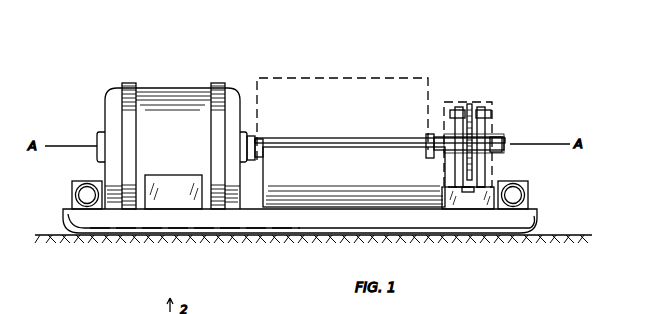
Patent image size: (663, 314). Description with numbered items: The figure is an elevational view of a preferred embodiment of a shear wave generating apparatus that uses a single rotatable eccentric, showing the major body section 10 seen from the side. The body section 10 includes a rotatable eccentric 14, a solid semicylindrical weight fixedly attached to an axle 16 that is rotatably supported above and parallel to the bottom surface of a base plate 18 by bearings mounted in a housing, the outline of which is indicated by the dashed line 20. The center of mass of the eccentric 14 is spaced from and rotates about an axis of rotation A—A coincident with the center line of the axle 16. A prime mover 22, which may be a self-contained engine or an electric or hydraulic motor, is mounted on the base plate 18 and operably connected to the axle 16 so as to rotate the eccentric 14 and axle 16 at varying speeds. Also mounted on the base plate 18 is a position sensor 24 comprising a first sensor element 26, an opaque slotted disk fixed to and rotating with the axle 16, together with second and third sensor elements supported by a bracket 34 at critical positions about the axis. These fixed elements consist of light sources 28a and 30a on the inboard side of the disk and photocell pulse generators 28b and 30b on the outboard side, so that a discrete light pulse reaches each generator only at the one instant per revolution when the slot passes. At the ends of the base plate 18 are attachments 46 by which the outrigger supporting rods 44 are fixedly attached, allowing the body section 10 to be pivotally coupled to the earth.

The body section 10 is at (355, 35).
The rotatable eccentric 14 is at (305, 158).
The axle 16 is at (348, 140).
The base plate 18 is at (153, 233).
The dashed line 20 is at (268, 78).
The prime mover 22 is at (162, 92).
The position sensor 24 is at (473, 123).
The first sensor element 26 is at (470, 104).
The light source 28a is at (450, 115).
The photocell pulse generator 28b is at (490, 117).
The light source 30a is at (426, 148).
The photocell pulse generator 30b is at (498, 137).
The bracket 34 is at (470, 192).
The outrigger supporting rods 44 is at (82, 196).
The attachments 46 is at (72, 183).